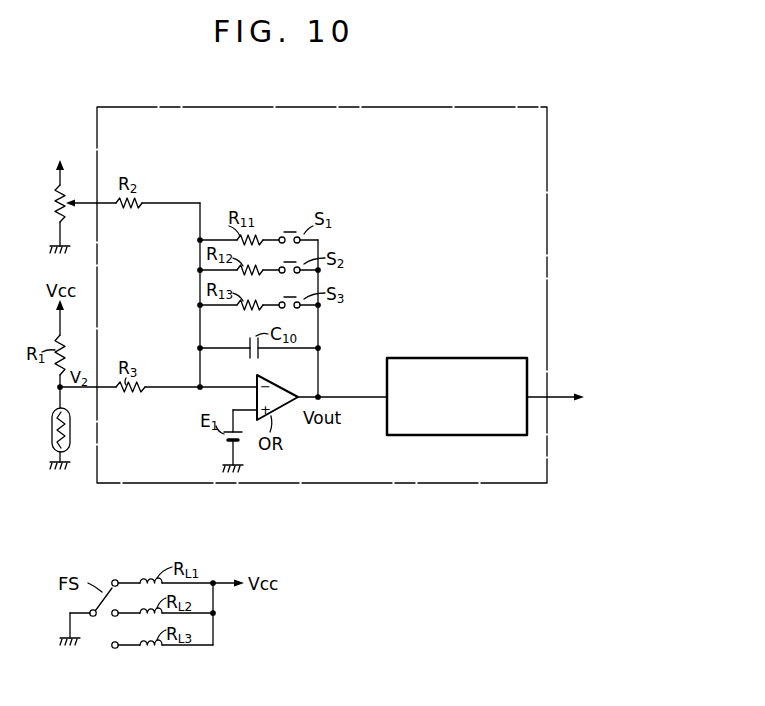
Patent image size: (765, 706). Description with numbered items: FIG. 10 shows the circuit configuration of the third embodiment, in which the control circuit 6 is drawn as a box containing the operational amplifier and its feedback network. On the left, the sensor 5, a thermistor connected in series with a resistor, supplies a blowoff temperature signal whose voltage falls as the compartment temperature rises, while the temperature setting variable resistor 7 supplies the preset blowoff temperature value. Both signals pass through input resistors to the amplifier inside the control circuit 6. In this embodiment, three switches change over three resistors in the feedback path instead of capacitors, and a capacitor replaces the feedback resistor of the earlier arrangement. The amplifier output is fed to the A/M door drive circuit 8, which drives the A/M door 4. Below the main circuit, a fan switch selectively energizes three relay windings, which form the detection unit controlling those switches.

The control circuit 6 is at (500, 112).
The temperature setting variable resistor 7 is at (53, 203).
The sensor 5 is at (52, 434).
The A/M door drive circuit 8 is at (493, 357).
The A/M door 4 is at (594, 395).